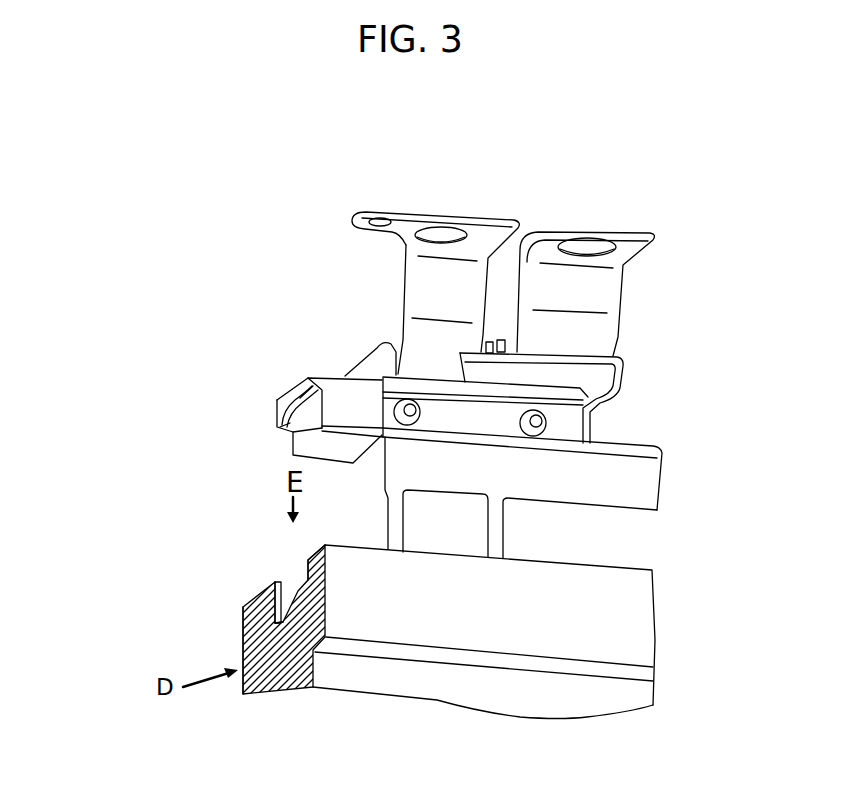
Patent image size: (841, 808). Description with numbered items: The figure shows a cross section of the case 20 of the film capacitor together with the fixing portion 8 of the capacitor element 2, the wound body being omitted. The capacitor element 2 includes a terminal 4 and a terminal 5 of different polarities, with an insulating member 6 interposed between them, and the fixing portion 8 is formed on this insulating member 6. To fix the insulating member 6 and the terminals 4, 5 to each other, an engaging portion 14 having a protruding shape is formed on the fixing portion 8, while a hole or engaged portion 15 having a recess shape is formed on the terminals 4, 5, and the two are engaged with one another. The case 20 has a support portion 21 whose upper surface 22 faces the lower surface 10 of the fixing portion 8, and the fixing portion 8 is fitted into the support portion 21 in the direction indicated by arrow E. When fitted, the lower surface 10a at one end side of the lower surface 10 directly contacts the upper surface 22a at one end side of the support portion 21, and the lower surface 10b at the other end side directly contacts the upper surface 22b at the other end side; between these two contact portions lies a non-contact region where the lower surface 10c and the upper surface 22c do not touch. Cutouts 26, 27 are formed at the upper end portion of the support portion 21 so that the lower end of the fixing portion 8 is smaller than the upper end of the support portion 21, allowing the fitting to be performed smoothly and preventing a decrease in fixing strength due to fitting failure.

The capacitor element 2 is at (278, 268).
The terminal 4 is at (612, 283).
The terminal 5 is at (423, 277).
The insulating member 6 is at (595, 373).
The fixing portion 8 is at (310, 388).
The lower surface 10 is at (192, 333).
The lower surface at one end side 10a is at (307, 390).
The lower surface at the other end side 10b is at (283, 427).
The lower surface in the center 10c is at (302, 413).
The engaging portion 14 is at (548, 421).
The engaged portion 15 is at (536, 431).
The case 20 is at (633, 623).
The support portion 21 is at (84, 472).
The upper surface 22 is at (134, 567).
The upper surface at one end side 22a is at (268, 590).
The upper surface at the other end side 22b is at (242, 630).
The upper surface in the center 22c is at (273, 623).
The cutout 26 is at (307, 568).
The cutout 27 is at (275, 582).